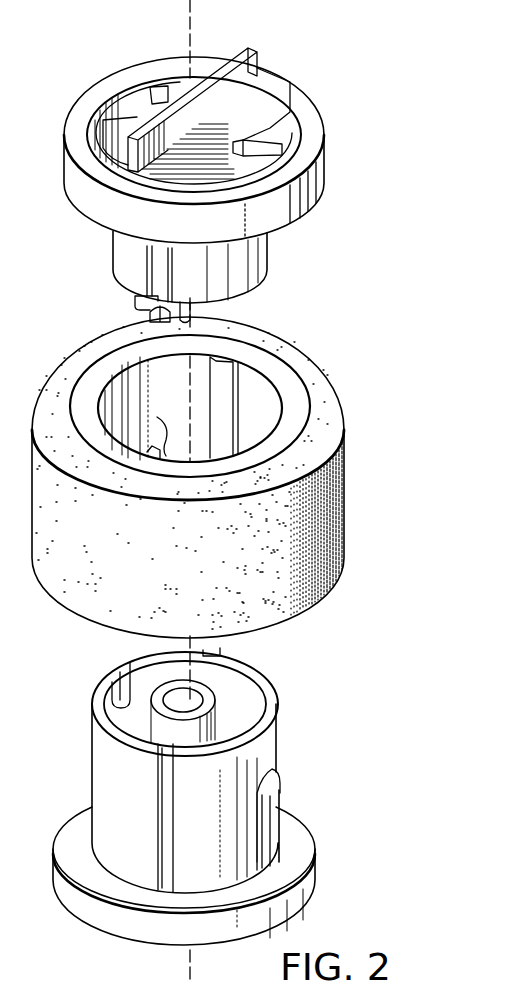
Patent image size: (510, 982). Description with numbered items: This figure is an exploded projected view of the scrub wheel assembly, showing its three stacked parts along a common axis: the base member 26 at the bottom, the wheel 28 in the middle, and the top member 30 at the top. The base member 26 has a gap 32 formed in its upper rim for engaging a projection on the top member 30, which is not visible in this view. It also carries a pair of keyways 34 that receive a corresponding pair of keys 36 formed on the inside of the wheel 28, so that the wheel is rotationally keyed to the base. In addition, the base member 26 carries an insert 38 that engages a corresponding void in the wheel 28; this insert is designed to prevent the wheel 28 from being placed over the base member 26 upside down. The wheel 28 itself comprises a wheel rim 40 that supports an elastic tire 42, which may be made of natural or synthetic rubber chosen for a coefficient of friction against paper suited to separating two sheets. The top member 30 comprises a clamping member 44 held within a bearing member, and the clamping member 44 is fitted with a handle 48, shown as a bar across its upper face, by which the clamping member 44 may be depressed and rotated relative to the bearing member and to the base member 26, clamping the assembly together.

The base member 26 is at (231, 793).
The wheel 28 is at (234, 477).
The top member 30 is at (232, 178).
The gap 32 is at (118, 680).
The keyways 34 is at (225, 650).
The keys 36 is at (220, 387).
The insert 38 is at (283, 793).
The wheel rim 40 is at (278, 375).
The elastic tire 42 is at (229, 477).
The clamping member 44 is at (344, 293).
The handle 48 is at (243, 73).